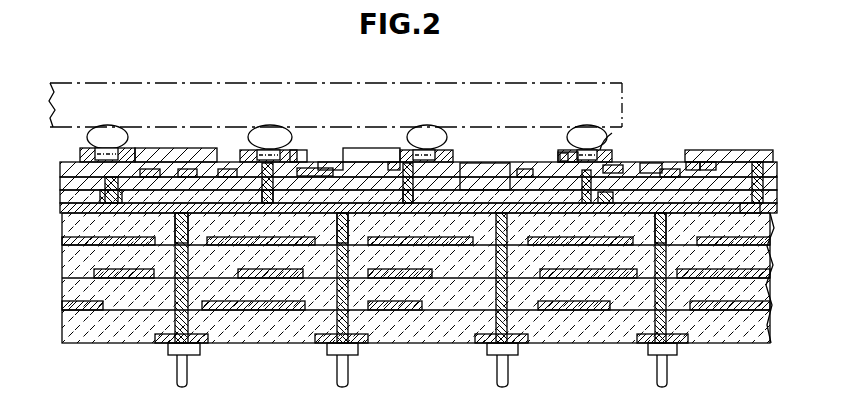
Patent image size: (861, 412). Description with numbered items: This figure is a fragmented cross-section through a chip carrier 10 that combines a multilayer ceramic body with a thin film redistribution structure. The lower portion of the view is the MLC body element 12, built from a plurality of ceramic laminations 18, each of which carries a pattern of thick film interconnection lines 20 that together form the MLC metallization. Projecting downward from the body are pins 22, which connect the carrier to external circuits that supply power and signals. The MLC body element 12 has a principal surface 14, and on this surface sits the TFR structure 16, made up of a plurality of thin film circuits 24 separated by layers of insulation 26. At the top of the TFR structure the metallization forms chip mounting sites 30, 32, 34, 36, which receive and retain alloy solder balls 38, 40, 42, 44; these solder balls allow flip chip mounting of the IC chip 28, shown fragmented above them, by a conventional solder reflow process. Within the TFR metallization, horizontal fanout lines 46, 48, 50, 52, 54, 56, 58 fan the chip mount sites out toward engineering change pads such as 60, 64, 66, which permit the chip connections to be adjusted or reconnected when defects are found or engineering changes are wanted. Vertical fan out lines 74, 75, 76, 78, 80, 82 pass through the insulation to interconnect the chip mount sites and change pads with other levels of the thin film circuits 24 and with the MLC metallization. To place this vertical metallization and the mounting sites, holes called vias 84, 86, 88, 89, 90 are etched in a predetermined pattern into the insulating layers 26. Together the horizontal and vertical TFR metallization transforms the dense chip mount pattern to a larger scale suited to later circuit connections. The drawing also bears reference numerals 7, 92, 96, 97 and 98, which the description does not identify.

The solder joint 7 is at (565, 152).
The carrier 10 is at (302, 350).
The MLC body element 12 is at (56, 214).
The principal surface 14 is at (54, 208).
The TFR structure 16 is at (56, 171).
The ceramic laminations 18 is at (140, 300).
The thick film interconnection lines 20 is at (258, 238).
The pins 22 is at (187, 376).
The thin film circuits 24 is at (670, 168).
The layers of insulation 26 is at (481, 187).
The IC chip 28 is at (470, 84).
The chip mounting site 30 is at (564, 152).
The chip mounting site 32 is at (447, 158).
The chip mounting site 34 is at (298, 151).
The chip mounting site 36 is at (80, 150).
The alloy solder ball 38 is at (592, 135).
The alloy solder ball 40 is at (425, 140).
The alloy solder ball 42 is at (270, 140).
The alloy solder ball 44 is at (110, 128).
The TFR fanout line 46 is at (658, 164).
The TFR fanout line 48 is at (615, 203).
The TFR fanout line 50 is at (527, 170).
The TFR fanout line 52 is at (330, 165).
The TFR fanout line 54 is at (224, 168).
The TFR fanout line 56 is at (188, 168).
The TFR fanout line 58 is at (150, 168).
The engineering change pad 60 is at (727, 151).
The engineering change pad 64 is at (205, 149).
The engineering change pad 66 is at (371, 149).
The vertical fan out line 74 is at (605, 150).
The vertical fan out line 75 is at (403, 183).
The vertical fan out line 76 is at (262, 183).
The vertical fan out line 78 is at (110, 181).
The vertical fan out line 80 is at (693, 162).
The vertical fan out line 82 is at (758, 162).
The via 84 is at (666, 226).
The via 86 is at (706, 162).
The via 88 is at (581, 203).
The via 89 is at (414, 183).
The via 90 is at (273, 183).
The via connection 92 is at (120, 187).
The thin film conductor 96 is at (303, 166).
The thin film conductor 97 is at (397, 163).
The thin film conductor 98 is at (612, 165).